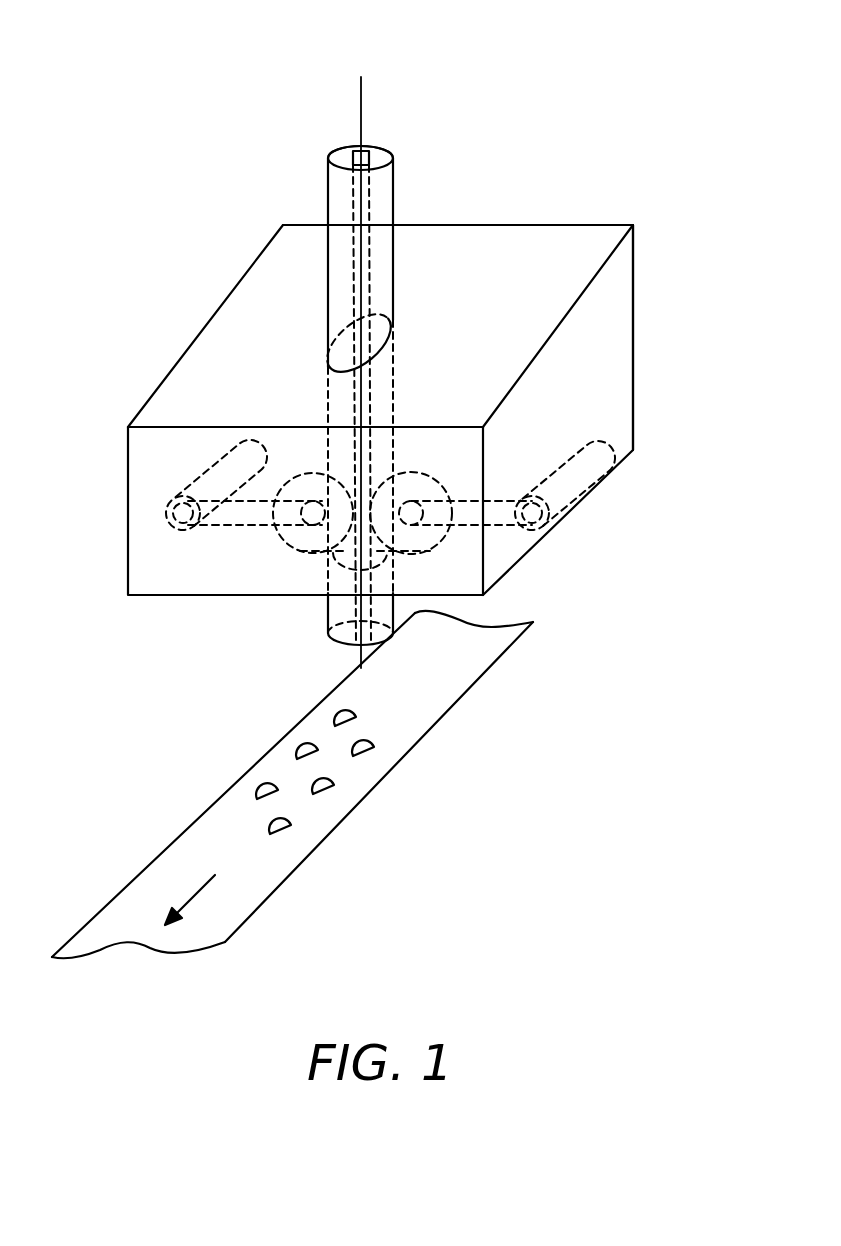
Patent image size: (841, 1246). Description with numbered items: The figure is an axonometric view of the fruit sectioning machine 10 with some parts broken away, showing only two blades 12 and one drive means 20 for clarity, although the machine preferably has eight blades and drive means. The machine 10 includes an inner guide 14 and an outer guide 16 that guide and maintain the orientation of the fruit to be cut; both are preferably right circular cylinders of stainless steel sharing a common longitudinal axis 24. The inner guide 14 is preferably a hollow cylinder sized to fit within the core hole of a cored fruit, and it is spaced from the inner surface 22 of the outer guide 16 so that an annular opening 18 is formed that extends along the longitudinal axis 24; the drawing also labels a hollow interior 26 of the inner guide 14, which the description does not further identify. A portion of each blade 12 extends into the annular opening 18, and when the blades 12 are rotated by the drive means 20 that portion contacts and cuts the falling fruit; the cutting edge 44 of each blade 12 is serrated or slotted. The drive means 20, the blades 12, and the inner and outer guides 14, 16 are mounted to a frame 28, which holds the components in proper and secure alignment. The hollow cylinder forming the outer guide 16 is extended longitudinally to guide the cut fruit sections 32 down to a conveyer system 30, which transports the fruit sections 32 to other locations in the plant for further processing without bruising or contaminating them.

The fruit sectioning machine 10 is at (588, 110).
The blade 12 is at (300, 549).
The inner guide 14 is at (370, 153).
The outer guide 16 is at (393, 212).
The annular opening 18 is at (340, 152).
The drive means 20 is at (541, 445).
The inner surface of the outer guide 22 is at (386, 156).
The longitudinal axis 24 is at (361, 77).
The passage 26 is at (353, 254).
The frame 28 is at (639, 233).
The conveyer system 30 is at (387, 778).
The fruit sections 32 is at (290, 823).
The cutting edge 44 is at (413, 473).